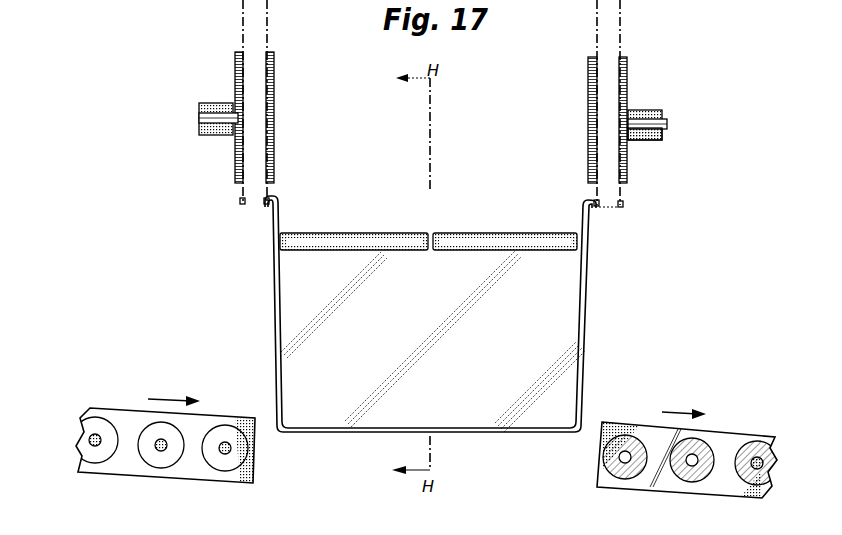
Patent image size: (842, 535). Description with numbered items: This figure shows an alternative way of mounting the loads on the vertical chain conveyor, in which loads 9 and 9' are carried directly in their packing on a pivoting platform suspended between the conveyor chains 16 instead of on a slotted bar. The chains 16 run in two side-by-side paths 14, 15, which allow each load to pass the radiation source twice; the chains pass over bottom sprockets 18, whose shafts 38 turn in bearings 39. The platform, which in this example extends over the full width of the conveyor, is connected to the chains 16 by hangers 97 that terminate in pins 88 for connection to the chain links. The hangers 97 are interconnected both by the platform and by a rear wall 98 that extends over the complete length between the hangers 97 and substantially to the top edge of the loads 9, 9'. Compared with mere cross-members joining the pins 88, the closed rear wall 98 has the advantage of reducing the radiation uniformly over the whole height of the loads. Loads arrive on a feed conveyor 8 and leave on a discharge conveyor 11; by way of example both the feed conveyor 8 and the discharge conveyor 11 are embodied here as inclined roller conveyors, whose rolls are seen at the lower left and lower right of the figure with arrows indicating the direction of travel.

The feed conveyor 8 is at (183, 462).
The load 9 is at (354, 227).
The load 9' is at (505, 227).
The discharge conveyor 11 is at (675, 483).
The first path 14 is at (350, 134).
The second path 15 is at (507, 134).
The chains 16 is at (243, 27).
The bottom sprockets 18 is at (627, 75).
The shafts 38 is at (199, 118).
The bearings 39 is at (650, 134).
The pins 88 is at (625, 204).
The hangers 97 is at (276, 293).
The rear wall 98 is at (500, 342).